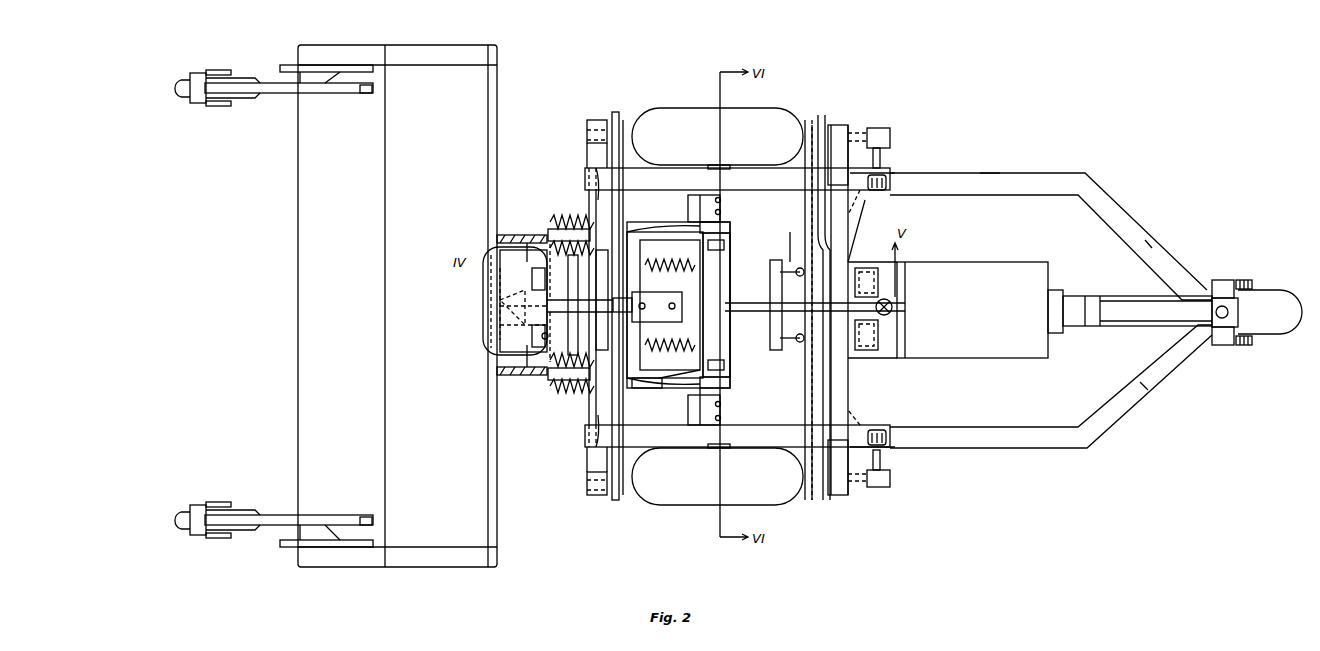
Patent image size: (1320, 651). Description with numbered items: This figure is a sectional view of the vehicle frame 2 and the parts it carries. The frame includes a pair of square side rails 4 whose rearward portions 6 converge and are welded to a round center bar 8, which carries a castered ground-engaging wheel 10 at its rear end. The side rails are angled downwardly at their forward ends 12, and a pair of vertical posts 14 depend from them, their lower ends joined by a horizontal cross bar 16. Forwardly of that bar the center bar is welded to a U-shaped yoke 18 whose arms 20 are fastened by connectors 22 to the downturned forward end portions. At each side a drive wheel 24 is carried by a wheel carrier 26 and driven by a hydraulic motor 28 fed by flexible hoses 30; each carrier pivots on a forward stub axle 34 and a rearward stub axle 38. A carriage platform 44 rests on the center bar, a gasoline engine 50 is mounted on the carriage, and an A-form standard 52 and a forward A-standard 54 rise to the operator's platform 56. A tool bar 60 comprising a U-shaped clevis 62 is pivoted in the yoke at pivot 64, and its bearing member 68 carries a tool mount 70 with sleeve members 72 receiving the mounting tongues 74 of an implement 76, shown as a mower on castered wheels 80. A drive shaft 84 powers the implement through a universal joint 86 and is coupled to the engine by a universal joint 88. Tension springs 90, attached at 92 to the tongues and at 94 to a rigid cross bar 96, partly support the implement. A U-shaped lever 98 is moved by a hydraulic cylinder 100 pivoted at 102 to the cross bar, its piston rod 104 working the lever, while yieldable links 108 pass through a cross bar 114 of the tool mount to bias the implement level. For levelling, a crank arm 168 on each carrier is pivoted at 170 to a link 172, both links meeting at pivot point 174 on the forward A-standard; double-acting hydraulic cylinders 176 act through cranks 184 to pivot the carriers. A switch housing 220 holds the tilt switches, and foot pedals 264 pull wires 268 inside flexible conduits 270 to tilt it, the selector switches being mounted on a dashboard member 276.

The vehicle frame 2 is at (994, 167).
The side rails 4 is at (1030, 173).
The rearward portions of side rails 6 is at (1150, 245).
The center bar 8 is at (1130, 326).
The castered ground-engaging wheel 10 is at (1282, 292).
The downturned forward end portions 12 is at (588, 178).
The vertical posts 14 is at (863, 307).
The horizontal cross bar 16 is at (848, 377).
The U-shaped yoke 18 is at (730, 335).
The yoke arms 20 is at (650, 232).
The connectors 22 is at (590, 198).
The drive wheel 24 is at (680, 112).
The wheel carrier 26 is at (630, 104).
The hydraulic motor 28 is at (722, 210).
The flexible hoses 30 is at (722, 200).
The forward stub axle 34 is at (596, 120).
The rearward stub axle 38 is at (866, 128).
The carriage platform 44 is at (782, 262).
The gasoline engine 50 is at (980, 262).
The upstanding standard 52 is at (872, 268).
The forward A-standard 54 is at (800, 262).
The operator's platform 56 is at (510, 330).
The tool bar 60 is at (672, 235).
The U-shaped clevis 62 is at (680, 378).
The pivot 64 is at (730, 228).
The bearing member 68 is at (670, 288).
The tool mount 70 is at (643, 388).
The sleeve member 72 is at (550, 218).
The mounting tongue 74 is at (520, 229).
The implement 76 is at (297, 283).
The castered wheels 80 is at (182, 92).
The drive shaft 84 is at (532, 292).
The universal joint 86 is at (485, 318).
The universal joint 88 is at (892, 302).
The tension springs 90 is at (565, 229).
The spring lower attachment 92 is at (530, 222).
The spring upper attachment 94 is at (596, 168).
The rigid cross bar 96 is at (636, 232).
The U-shaped lever 98 is at (725, 280).
The hydraulic cylinder 100 is at (652, 322).
The cylinder pivot 102 is at (628, 302).
The piston rod 104 is at (688, 340).
The yieldable link 108 is at (720, 222).
The tool mount cross bar 114 is at (596, 268).
The crank arm 168 is at (834, 125).
The link pivot 170 is at (818, 118).
The link 172 is at (808, 155).
The pivot point 174 is at (865, 231).
The double-acting hydraulic cylinders 176 is at (905, 172).
The crank 184 is at (888, 158).
The switch housing 220 is at (808, 360).
The foot pedals 264 is at (497, 247).
The wire 268 is at (575, 300).
The flexible conduit 270 is at (548, 338).
The dashboard member 276 is at (480, 304).